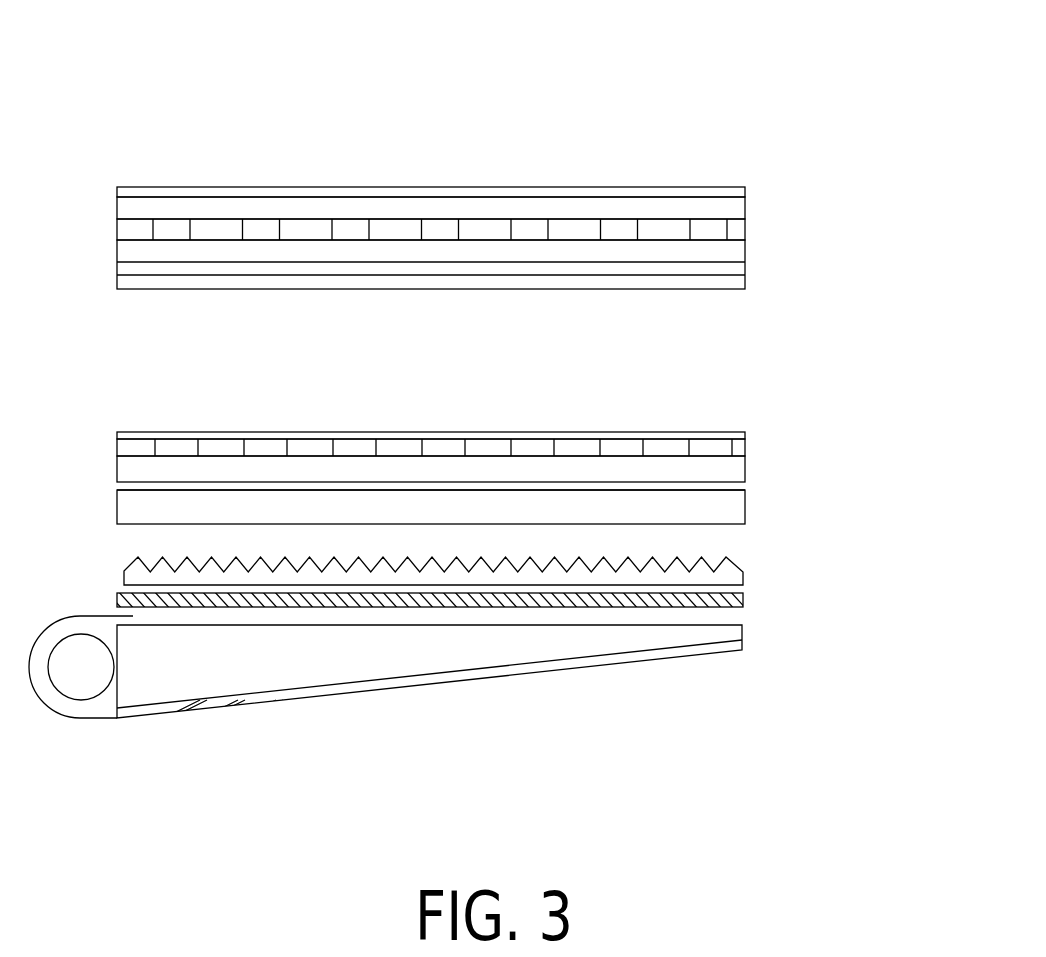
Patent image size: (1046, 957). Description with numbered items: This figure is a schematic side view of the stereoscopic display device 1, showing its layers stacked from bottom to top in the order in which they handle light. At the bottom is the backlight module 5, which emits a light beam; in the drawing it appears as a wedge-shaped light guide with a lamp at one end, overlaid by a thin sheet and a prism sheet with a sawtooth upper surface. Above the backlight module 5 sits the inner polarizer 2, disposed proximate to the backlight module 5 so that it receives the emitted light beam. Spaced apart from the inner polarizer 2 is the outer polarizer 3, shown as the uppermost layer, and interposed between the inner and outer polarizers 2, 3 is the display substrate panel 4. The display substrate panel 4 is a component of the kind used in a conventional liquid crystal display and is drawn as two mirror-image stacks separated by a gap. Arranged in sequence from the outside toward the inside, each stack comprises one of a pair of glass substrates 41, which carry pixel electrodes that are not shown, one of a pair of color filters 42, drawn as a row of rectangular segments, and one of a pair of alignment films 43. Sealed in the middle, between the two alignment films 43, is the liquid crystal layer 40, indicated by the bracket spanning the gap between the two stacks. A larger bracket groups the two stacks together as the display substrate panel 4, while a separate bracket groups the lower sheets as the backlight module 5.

The stereoscopic display device 1 is at (850, 134).
The inner polarizer 2 is at (745, 500).
The outer polarizer 3 is at (745, 191).
The display substrate panel 4 is at (862, 172).
The backlight module 5 is at (762, 553).
The liquid crystal layer 40 is at (760, 292).
The glass substrates 41 is at (745, 213).
The color filters 42 is at (745, 227).
The alignment films 43 is at (745, 267).